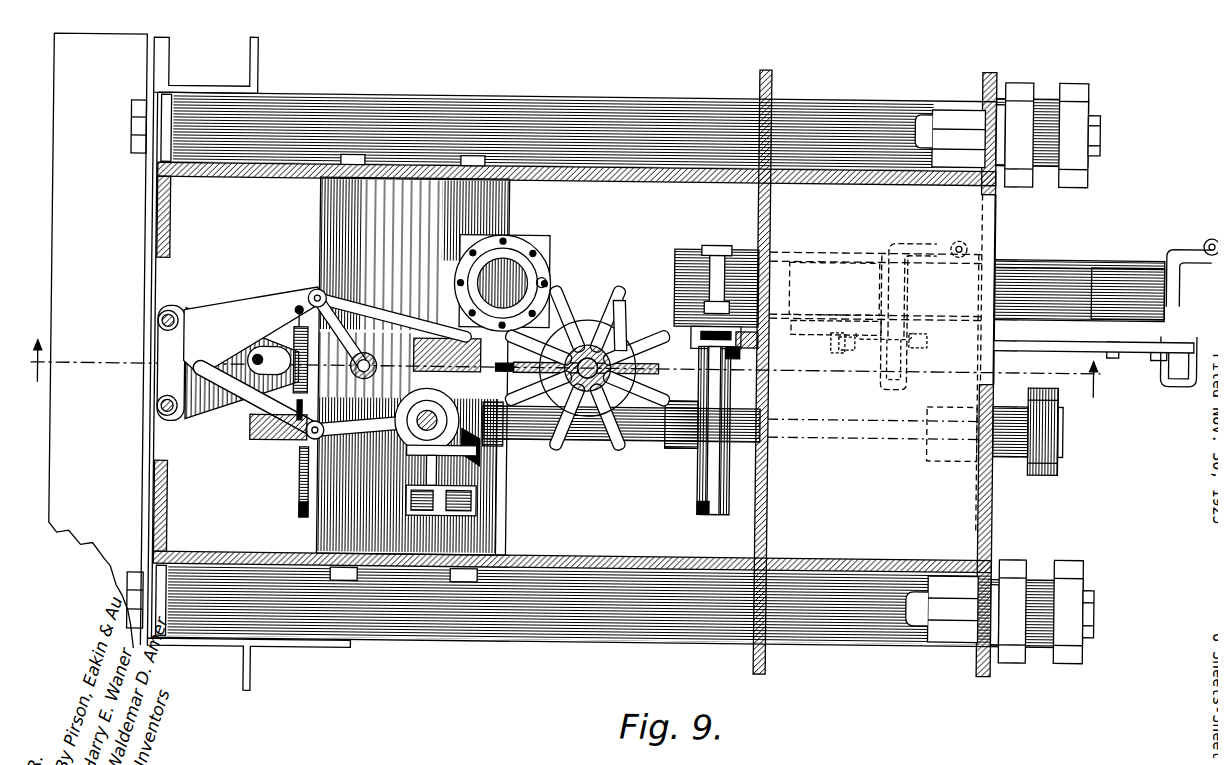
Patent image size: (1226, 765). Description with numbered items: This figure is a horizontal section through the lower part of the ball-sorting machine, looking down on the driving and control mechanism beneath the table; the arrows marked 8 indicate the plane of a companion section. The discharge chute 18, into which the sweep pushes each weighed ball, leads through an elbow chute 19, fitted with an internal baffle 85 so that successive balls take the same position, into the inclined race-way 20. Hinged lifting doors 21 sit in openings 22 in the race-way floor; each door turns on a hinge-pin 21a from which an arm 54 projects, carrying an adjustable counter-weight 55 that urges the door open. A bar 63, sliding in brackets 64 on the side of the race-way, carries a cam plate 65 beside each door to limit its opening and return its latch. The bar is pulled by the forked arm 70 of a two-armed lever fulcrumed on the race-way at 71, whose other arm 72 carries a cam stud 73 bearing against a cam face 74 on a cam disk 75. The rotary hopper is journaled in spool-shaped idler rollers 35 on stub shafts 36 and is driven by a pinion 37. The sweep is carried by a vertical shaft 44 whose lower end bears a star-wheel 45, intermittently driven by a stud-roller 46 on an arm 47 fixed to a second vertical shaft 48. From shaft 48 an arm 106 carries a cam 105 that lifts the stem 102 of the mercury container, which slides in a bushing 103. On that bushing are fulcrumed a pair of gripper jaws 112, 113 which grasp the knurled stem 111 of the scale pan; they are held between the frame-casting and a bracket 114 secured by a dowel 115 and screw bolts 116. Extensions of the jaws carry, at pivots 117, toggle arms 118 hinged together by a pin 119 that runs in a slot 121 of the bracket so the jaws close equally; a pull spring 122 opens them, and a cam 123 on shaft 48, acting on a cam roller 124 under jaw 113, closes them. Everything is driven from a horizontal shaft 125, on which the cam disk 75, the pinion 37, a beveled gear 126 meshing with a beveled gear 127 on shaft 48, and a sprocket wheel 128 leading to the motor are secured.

The section line 8- 8 is at (568, 377).
The discharge chute 18 is at (516, 254).
The elbow chute 19 is at (618, 252).
The inclined race-way 20 is at (1038, 256).
The hinged lifting doors 21 is at (836, 264).
The hinge-pin 21a is at (852, 348).
The openings 22 is at (797, 252).
The spool-shaped idler rollers 35 is at (1076, 80).
The stub shafts 36 is at (1099, 131).
The pinion 37 is at (1044, 471).
The vertical shaft 44 is at (585, 420).
The star-wheel 45 is at (622, 320).
The stud-roller 46 is at (290, 445).
The arm 47 is at (300, 492).
The vertical shaft 48 is at (318, 520).
The arm 54 is at (903, 240).
The counter-weight 55 is at (951, 237).
The bar 63 is at (1050, 347).
The brackets 64 is at (896, 378).
The cam plate 65 is at (828, 343).
The arm 70 is at (697, 334).
The fulcrum 71 is at (712, 258).
The arm 72 is at (782, 320).
The cam stud 73 is at (765, 365).
The cam face 74 is at (735, 358).
The cam disk 75 is at (700, 480).
The internal baffle 85 is at (545, 278).
The push-rod or stem 102 is at (363, 354).
The bushing 103 is at (452, 338).
The cam 105 is at (478, 490).
The arm 106 is at (478, 510).
The knurled stem 111 is at (500, 374).
The gripper jaw 112 is at (455, 340).
The gripper jaw 113 is at (300, 510).
The bracket 114 is at (170, 346).
The dowel 115 is at (258, 356).
The screw bolts 116 is at (158, 325).
The pivots 117 is at (311, 294).
The toggle arms 118 is at (246, 330).
The pin 119 is at (190, 371).
The slot 121 is at (228, 345).
The pull spring 122 is at (252, 444).
The cam 123 is at (318, 536).
The cam roller 124 is at (462, 433).
The horizontal shaft 125 is at (642, 442).
The beveled gear 126 is at (472, 442).
The beveled gear 127 is at (476, 458).
The sprocket wheel 128 is at (296, 522).